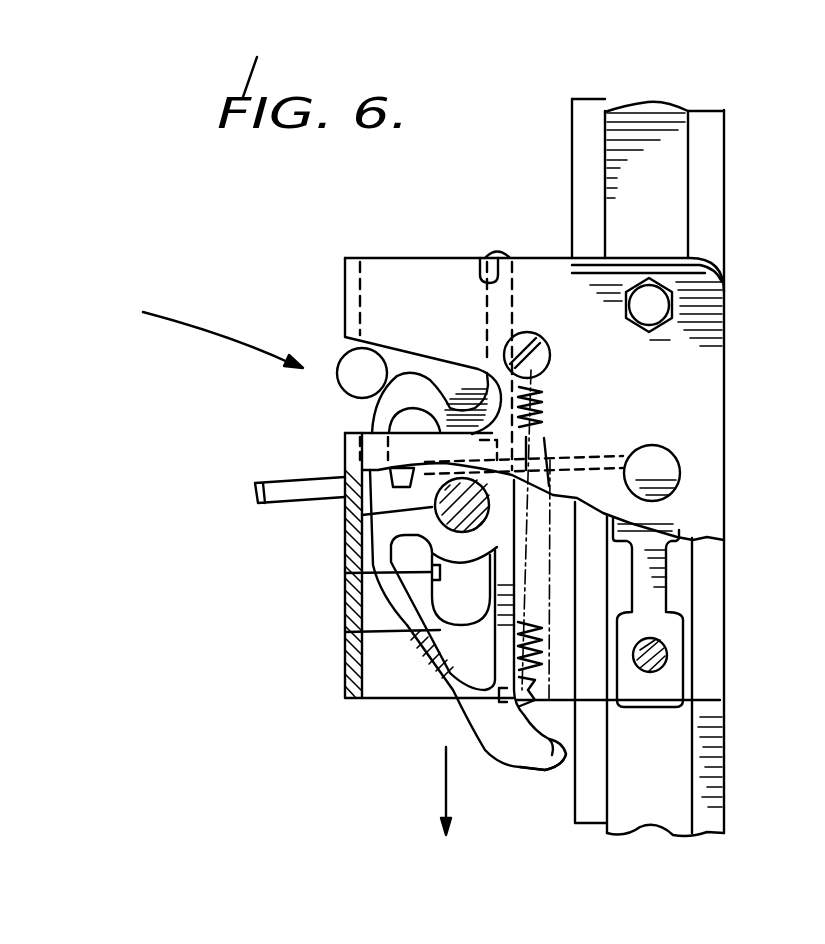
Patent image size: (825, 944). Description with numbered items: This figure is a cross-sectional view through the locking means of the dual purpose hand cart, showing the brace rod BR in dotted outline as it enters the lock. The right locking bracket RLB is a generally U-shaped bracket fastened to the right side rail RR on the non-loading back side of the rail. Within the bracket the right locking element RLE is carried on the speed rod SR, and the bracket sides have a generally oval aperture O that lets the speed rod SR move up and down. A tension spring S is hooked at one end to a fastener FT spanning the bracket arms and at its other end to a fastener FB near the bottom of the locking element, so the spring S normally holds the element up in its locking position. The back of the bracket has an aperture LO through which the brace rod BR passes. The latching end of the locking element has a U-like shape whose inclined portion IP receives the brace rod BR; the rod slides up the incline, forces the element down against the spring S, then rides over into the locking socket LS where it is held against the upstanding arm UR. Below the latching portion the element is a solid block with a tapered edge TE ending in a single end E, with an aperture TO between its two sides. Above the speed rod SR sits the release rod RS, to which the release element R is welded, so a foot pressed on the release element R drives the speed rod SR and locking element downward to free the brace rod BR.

The right side rail RR is at (726, 142).
The upper receiver UR is at (470, 275).
The aperture LO is at (390, 358).
The fastener FT is at (523, 333).
The inclined portion IP is at (345, 355).
The brace rod BR is at (362, 402).
The locking socket LS is at (457, 410).
The right locking element RLE is at (372, 415).
The release element R is at (272, 485).
The speed rod SR is at (436, 506).
The aperture O is at (432, 573).
The aperture TO is at (410, 644).
The tapered edge TE is at (448, 675).
The right locking bracket RLB is at (705, 368).
The release rod RS is at (678, 465).
The tension spring S is at (540, 647).
The fastener FB is at (547, 762).
The end E is at (548, 757).